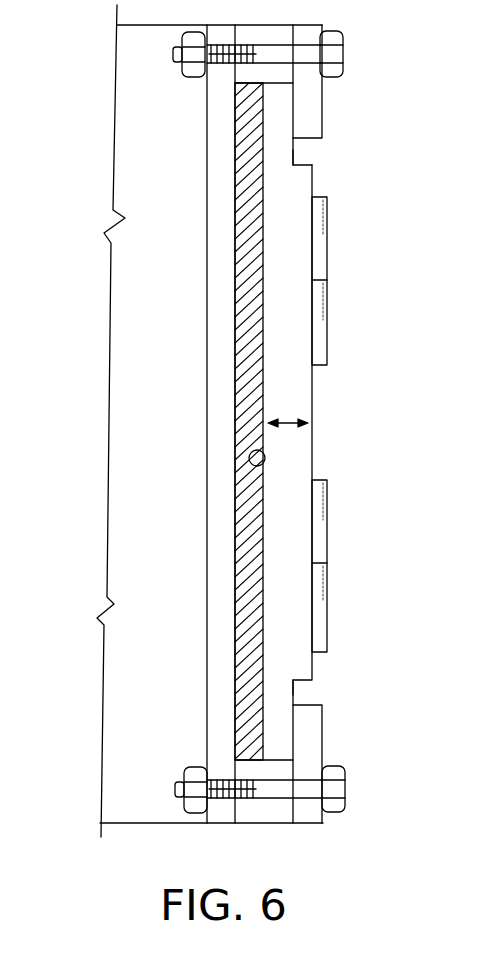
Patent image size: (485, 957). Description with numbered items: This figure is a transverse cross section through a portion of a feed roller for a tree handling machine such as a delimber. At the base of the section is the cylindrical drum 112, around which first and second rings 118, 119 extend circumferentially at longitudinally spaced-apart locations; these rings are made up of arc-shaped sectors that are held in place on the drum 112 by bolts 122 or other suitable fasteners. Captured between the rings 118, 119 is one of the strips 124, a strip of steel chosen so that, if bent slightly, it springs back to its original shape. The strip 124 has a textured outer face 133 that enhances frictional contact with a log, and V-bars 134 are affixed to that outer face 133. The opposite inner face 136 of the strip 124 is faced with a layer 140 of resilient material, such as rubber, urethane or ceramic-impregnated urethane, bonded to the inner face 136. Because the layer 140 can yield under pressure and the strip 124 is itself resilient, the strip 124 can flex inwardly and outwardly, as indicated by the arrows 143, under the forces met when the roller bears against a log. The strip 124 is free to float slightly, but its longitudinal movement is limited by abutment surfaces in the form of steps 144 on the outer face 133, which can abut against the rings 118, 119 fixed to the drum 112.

The cylindrical drum 112 is at (218, 138).
The first ring 118 is at (307, 107).
The second ring 119 is at (313, 730).
The bolts 122 is at (343, 57).
The strips 124 is at (300, 180).
The outer face 133 is at (313, 440).
The V-bars 134 is at (328, 322).
The inner face 136 is at (265, 466).
The layer of resilient material 140 is at (247, 518).
The arrows 143 is at (288, 420).
The steps 144 is at (303, 158).